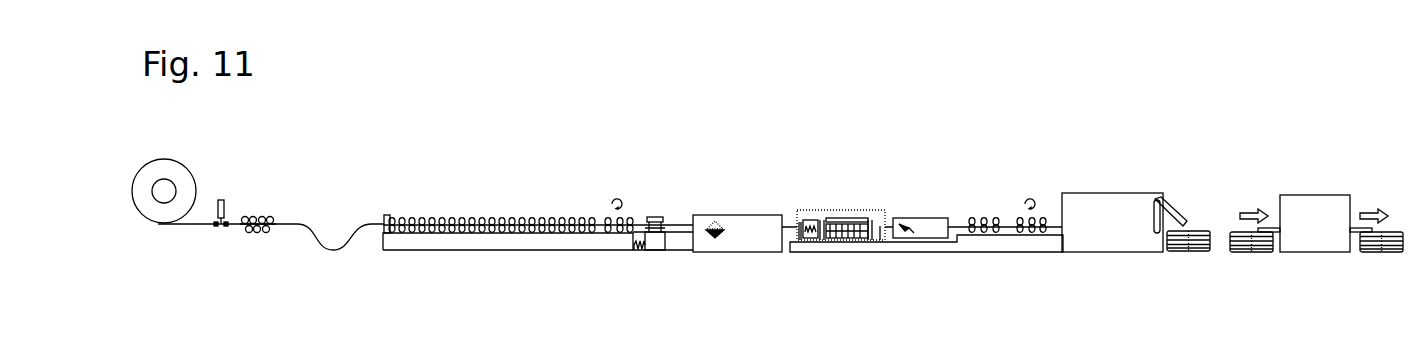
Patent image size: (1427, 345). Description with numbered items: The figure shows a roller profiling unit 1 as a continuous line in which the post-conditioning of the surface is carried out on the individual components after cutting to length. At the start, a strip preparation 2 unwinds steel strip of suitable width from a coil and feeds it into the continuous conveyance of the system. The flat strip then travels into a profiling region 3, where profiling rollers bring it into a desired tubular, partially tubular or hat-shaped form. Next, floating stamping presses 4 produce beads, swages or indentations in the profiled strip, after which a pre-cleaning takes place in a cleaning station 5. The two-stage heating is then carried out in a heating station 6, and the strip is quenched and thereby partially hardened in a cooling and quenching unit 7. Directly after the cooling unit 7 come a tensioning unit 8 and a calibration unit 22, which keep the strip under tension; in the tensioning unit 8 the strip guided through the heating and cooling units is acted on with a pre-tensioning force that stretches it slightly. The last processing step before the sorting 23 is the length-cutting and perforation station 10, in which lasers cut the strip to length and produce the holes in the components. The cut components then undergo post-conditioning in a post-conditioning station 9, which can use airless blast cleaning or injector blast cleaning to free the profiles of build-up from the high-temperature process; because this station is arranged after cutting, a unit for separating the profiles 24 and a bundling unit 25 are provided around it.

The roller profiling unit 1 is at (388, 275).
The strip preparation 2 is at (247, 178).
The profiling region 3 is at (513, 182).
The floating stamping presses 4 is at (663, 205).
The cleaning station 5 is at (738, 210).
The heating station 6 is at (830, 210).
The cooling and quenching unit 7 is at (913, 210).
The tensioning unit 8 is at (980, 176).
The post-conditioning station 9 is at (1319, 172).
The length-cutting and perforation station 10 is at (1103, 178).
The calibration unit 22 is at (616, 190).
The sorting 23 is at (1187, 178).
The unit for separating the profiles 24 is at (1260, 178).
The bundling 25 is at (1383, 178).